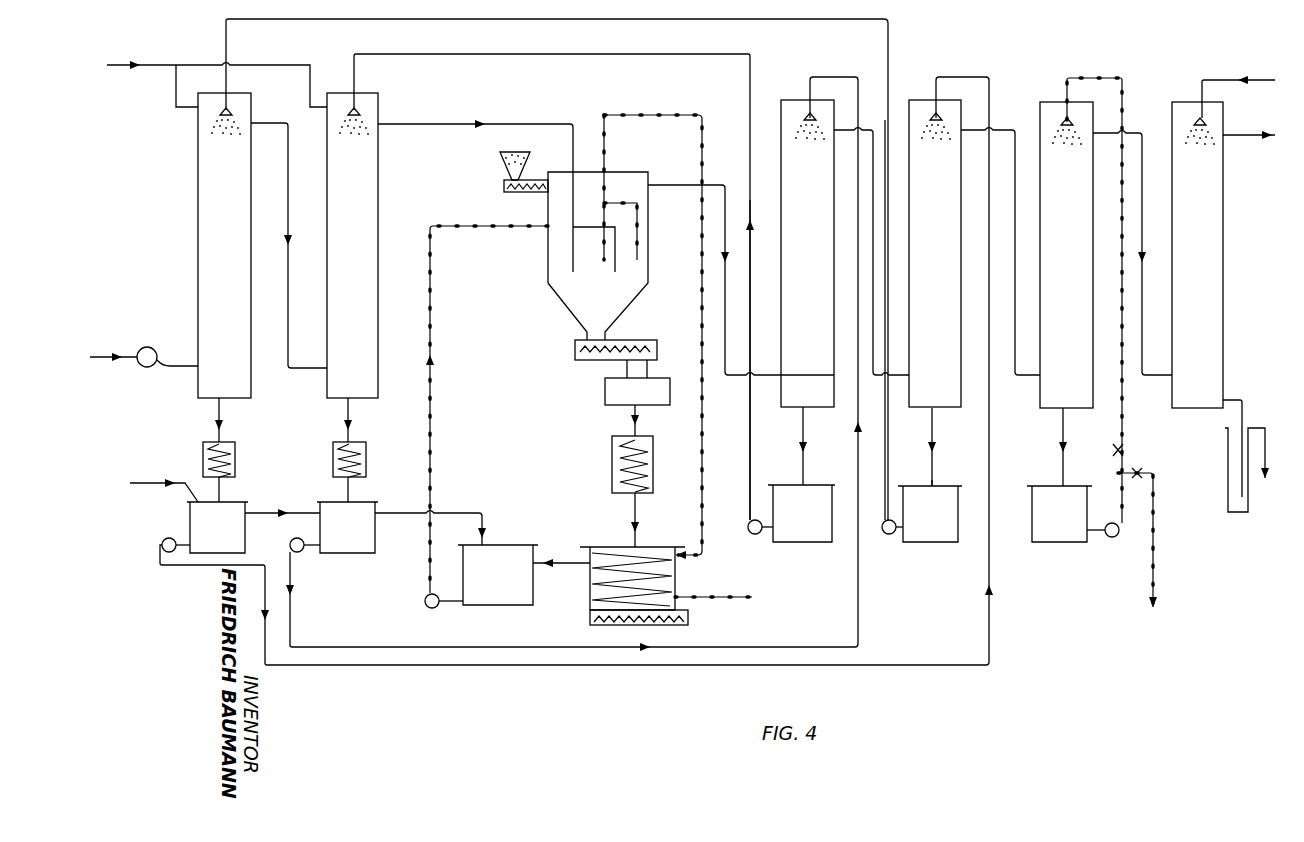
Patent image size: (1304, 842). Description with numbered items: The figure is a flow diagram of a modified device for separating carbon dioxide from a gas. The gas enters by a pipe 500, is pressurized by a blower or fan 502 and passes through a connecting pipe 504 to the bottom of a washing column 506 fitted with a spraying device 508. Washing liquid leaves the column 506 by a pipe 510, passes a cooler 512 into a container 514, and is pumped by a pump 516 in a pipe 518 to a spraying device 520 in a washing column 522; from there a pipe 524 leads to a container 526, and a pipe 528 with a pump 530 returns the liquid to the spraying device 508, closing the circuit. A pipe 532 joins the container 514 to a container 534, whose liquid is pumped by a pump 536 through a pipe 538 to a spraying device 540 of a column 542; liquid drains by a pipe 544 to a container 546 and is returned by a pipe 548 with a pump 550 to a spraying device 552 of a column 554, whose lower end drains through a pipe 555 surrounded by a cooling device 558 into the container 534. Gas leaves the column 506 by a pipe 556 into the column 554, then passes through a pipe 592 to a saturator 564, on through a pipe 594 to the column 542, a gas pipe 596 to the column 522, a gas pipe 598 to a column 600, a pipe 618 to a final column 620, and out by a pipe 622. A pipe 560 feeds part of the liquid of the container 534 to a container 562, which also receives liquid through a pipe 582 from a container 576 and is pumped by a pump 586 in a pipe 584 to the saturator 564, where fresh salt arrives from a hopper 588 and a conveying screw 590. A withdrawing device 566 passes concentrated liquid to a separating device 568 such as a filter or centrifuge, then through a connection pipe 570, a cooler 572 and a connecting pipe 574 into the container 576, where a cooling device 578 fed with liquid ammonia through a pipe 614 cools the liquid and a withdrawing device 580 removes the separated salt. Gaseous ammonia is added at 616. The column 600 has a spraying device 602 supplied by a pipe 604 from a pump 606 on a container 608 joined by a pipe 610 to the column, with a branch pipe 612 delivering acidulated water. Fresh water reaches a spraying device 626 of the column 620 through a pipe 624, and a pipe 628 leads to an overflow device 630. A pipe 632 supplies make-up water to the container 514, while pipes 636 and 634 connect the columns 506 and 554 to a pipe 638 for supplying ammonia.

The pipe 500 is at (124, 355).
The blower or fan 502 is at (150, 347).
The connecting pipe 504 is at (172, 368).
The washing tower or column 506 is at (205, 190).
The spraying device 508 is at (222, 118).
The pipe 510 is at (215, 410).
The cooler 512 is at (235, 452).
The container 514 is at (230, 530).
The pump 516 is at (165, 538).
The pipe 518 is at (395, 668).
The spraying device 520 is at (934, 112).
The washing column or tower 522 is at (950, 395).
The pipe 524 is at (934, 480).
The container 526 is at (950, 550).
The pipe 528 is at (882, 480).
The pump 530 is at (888, 540).
The pipe 532 is at (275, 510).
The container 534 is at (350, 558).
The pump 536 is at (297, 553).
The pipe 538 is at (395, 642).
The spraying device 540 is at (808, 112).
The column 542 is at (798, 395).
The pipe 544 is at (800, 470).
The container 546 is at (815, 550).
The pipe 548 is at (748, 475).
The pump 550 is at (752, 535).
The spraying device 552 is at (357, 110).
The column 554 is at (360, 210).
The pipe 555 is at (350, 410).
The pipe 556 is at (288, 122).
The cooling device 558 is at (366, 455).
The pipe 560 is at (478, 510).
The container 562 is at (508, 550).
The saturator 564 is at (637, 280).
The withdrawing device 566 is at (635, 340).
The device 568 is at (605, 390).
The connection pipe 570 is at (630, 418).
The cooler 572 is at (612, 462).
The connecting pipe 574 is at (630, 503).
The container 576 is at (660, 563).
The cooling device 578 is at (676, 569).
The withdrawing device 580 is at (690, 620).
The pipe 582 is at (567, 568).
The pipe 584 is at (426, 585).
The pump 586 is at (436, 610).
The hopper 588 is at (500, 155).
The conveying screw 590 is at (512, 194).
The pipe 592 is at (445, 122).
The pipe 594 is at (714, 333).
The gas pipe 596 is at (873, 120).
The gas pipe 598 is at (1012, 118).
The column 600 is at (1045, 392).
The spraying device 602 is at (1068, 112).
The pipe 604 is at (1118, 76).
The pump 606 is at (1112, 540).
The container 608 is at (1052, 550).
The pipe 610 is at (1060, 468).
The pipe 612 is at (1172, 474).
The pipe 614 is at (700, 113).
The ammonia addition point 616 is at (604, 172).
The pipe 618 is at (1142, 128).
The final column 620 is at (1215, 232).
The pipe 622 is at (1250, 140).
The pipe 624 is at (1210, 76).
The spraying device 626 is at (1202, 118).
The pipe 628 is at (1258, 395).
The overflow device 630 is at (1240, 516).
The pipe 632 is at (178, 483).
The pipe 634 is at (322, 60).
The pipe 636 is at (165, 100).
The pipe 638 is at (175, 65).